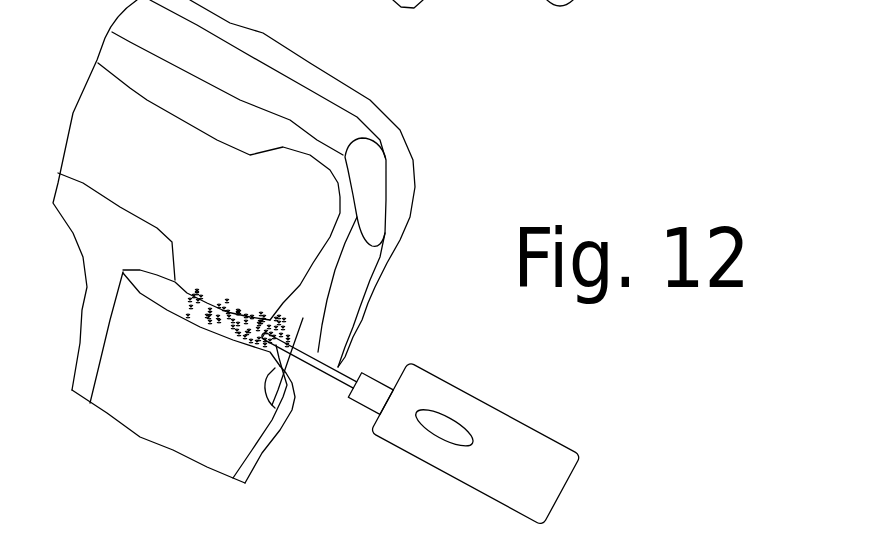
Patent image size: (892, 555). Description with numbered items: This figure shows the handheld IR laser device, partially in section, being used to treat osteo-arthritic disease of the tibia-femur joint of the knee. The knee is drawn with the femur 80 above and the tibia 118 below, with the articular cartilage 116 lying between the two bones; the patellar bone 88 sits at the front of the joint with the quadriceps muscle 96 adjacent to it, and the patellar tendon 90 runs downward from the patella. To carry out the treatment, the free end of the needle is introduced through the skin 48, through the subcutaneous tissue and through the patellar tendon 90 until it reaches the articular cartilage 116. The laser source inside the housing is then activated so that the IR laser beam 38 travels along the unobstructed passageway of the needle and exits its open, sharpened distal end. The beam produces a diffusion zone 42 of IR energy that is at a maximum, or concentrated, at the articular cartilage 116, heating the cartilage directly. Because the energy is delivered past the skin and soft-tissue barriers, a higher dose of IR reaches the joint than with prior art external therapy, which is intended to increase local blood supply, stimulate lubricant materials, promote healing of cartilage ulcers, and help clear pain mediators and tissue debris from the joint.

The IR laser beam 38 is at (253, 330).
The diffusion zone 42 is at (278, 328).
The skin 48 is at (377, 105).
The femur 80 is at (292, 238).
The patellar bone 88 is at (368, 182).
The patellar tendon 90 is at (332, 293).
The quadriceps muscle 96 is at (282, 103).
The articular cartilage 116 is at (197, 320).
The tibia 118 is at (233, 420).